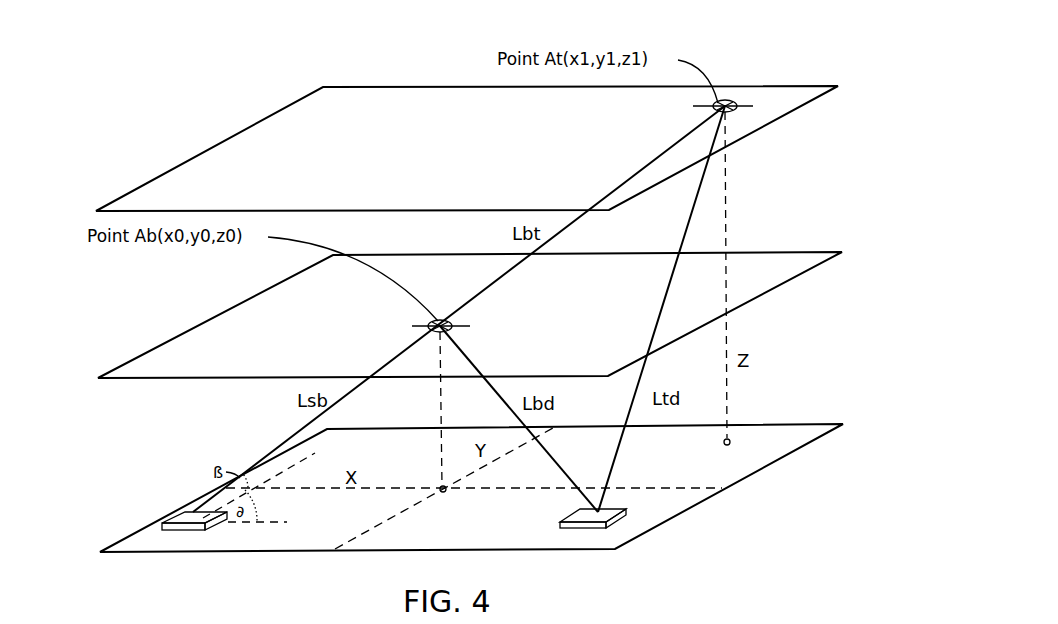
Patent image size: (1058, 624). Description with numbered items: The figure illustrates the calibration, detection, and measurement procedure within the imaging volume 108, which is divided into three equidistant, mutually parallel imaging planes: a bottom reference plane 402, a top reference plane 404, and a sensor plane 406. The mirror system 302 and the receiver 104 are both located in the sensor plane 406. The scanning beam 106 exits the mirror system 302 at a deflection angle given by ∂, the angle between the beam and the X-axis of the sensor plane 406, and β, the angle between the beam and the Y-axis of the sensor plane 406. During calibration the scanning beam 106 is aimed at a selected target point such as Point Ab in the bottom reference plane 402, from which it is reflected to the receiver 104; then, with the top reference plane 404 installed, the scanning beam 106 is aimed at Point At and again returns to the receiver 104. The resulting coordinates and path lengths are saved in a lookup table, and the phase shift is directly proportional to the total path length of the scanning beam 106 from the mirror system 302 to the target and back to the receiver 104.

The imaging volume 108 is at (184, 35).
The top reference plane 404 is at (264, 152).
The bottom reference plane 402 is at (228, 328).
The sensor plane 406 is at (140, 545).
The scanning beam 106 is at (300, 432).
The mirror system 302 is at (187, 515).
The receiver 104 is at (622, 500).